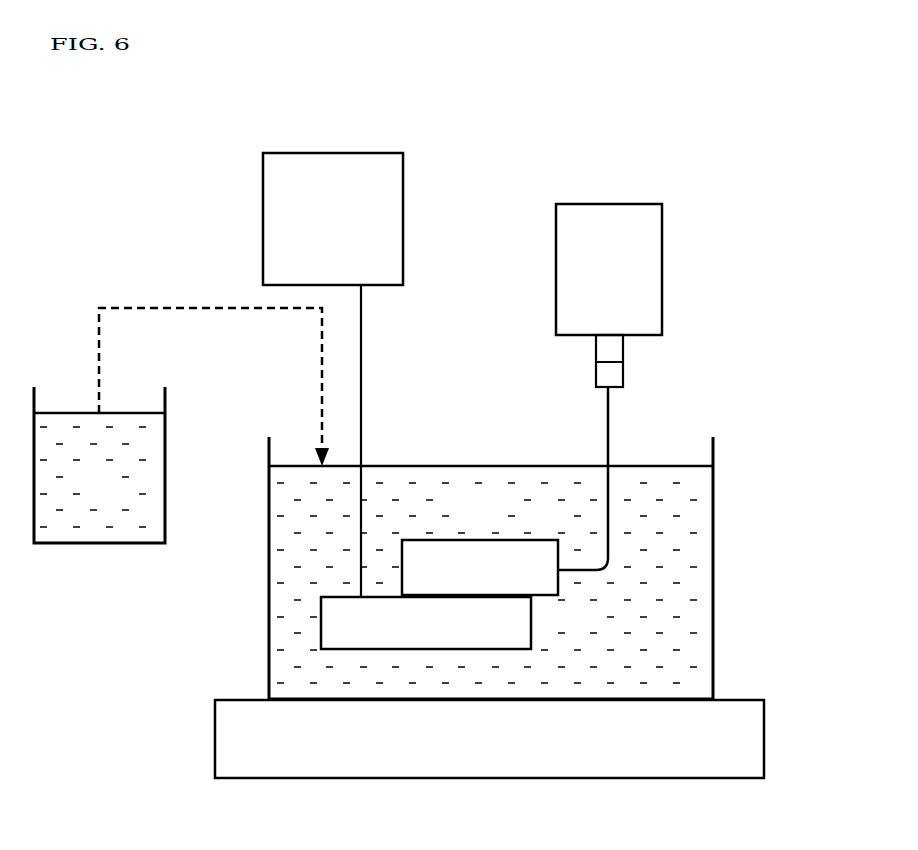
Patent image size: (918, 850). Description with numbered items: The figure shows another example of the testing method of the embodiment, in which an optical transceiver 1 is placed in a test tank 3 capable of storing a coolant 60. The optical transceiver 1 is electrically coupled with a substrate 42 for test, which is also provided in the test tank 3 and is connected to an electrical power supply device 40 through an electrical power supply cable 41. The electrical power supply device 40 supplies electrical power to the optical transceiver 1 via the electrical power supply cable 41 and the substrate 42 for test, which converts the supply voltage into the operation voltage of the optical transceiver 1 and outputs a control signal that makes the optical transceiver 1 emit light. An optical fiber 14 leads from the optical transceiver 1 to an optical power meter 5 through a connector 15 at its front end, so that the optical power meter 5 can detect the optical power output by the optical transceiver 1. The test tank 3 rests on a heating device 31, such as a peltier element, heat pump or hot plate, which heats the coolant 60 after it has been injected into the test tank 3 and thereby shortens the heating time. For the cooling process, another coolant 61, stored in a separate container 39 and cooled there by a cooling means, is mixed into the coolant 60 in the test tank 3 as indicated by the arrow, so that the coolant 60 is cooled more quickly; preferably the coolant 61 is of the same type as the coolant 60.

The optical transceiver 1 is at (520, 540).
The test tank 3 is at (713, 448).
The optical power meter 5 is at (662, 212).
The optical fiber 14 is at (608, 433).
The connector 15 is at (623, 375).
The heating device 31 is at (738, 700).
The container 39 is at (165, 397).
The electrical power supply device 40 is at (403, 210).
The electrical power supply cable 41 is at (361, 385).
The substrate for test 42 is at (531, 638).
The coolant 60 is at (489, 517).
The coolant 61 is at (111, 494).